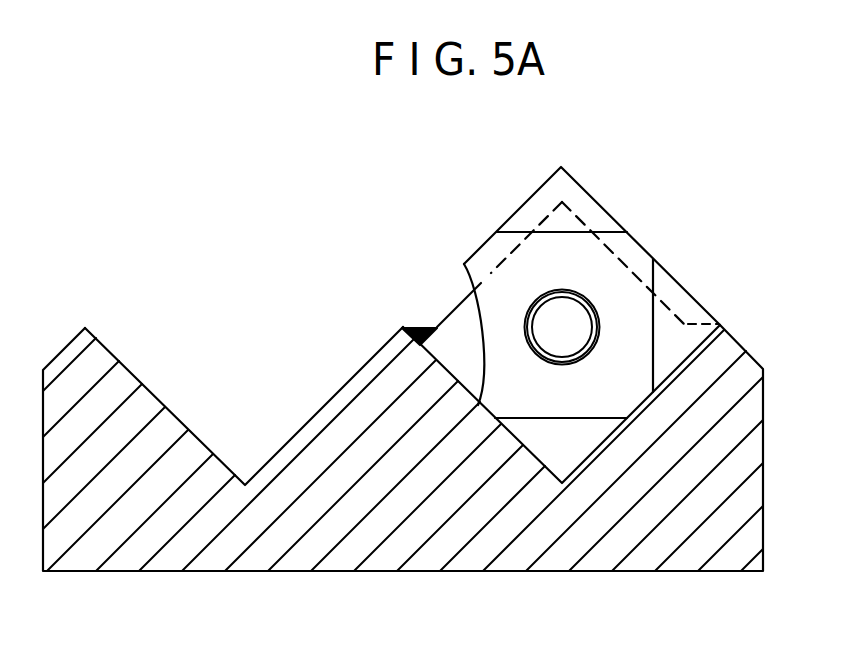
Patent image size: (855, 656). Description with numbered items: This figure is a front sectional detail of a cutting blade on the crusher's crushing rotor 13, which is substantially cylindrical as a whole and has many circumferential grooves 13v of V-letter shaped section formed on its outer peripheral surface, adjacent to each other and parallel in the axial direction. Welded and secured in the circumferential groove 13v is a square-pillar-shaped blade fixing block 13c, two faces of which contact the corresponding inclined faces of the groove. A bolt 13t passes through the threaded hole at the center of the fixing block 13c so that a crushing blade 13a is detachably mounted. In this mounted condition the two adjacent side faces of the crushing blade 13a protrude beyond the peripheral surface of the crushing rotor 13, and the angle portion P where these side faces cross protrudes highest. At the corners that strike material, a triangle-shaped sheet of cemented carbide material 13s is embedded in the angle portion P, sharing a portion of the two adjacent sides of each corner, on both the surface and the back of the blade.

The crushing rotor 13 is at (677, 528).
The crushing blade 13a is at (640, 238).
The blade fixing block 13c is at (455, 340).
The cemented carbide material 13s is at (553, 196).
The bolt 13t is at (568, 329).
The circumferential groove 13v is at (328, 402).
The angle portion P is at (560, 167).